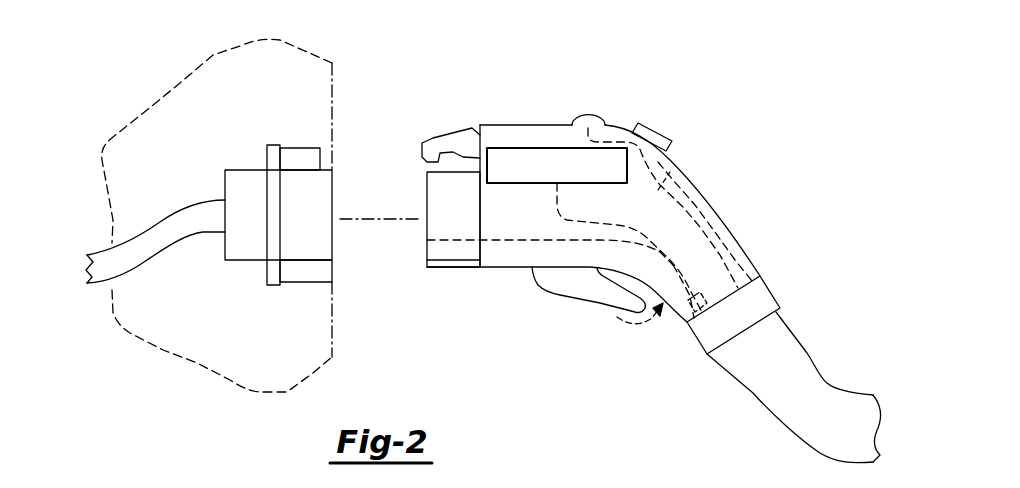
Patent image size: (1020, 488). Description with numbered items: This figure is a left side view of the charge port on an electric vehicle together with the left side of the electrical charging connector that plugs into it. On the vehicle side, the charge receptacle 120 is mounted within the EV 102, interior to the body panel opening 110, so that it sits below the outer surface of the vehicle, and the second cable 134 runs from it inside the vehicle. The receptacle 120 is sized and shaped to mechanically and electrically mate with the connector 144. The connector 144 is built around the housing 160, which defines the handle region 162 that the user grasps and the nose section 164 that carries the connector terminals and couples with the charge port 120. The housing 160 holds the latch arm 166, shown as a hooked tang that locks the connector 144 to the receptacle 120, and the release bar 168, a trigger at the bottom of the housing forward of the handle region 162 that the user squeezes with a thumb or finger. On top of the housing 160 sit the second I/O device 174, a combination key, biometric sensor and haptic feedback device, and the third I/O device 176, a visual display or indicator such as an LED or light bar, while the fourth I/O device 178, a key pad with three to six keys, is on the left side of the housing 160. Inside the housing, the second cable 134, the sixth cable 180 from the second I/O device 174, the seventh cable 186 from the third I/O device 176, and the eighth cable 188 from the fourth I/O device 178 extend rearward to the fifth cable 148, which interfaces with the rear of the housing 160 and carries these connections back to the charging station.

The electric vehicle 102 is at (332, 63).
The body panel opening 110 is at (332, 282).
The charge receptacle 120 is at (332, 168).
The second cable 134 is at (190, 200).
The electrical charging connector 144 is at (518, 108).
The fifth cable 148 is at (748, 403).
The housing 160 is at (553, 125).
The handle region 162 is at (745, 242).
The nose section 164 is at (453, 268).
The latch arm 166 is at (457, 128).
The release bar 168 is at (597, 302).
The second I/O device 174 is at (655, 126).
The third I/O device 176 is at (590, 113).
The fourth I/O device 178 is at (497, 147).
The sixth cable 180 is at (714, 215).
The seventh cable 186 is at (680, 162).
The eighth cable 188 is at (682, 305).